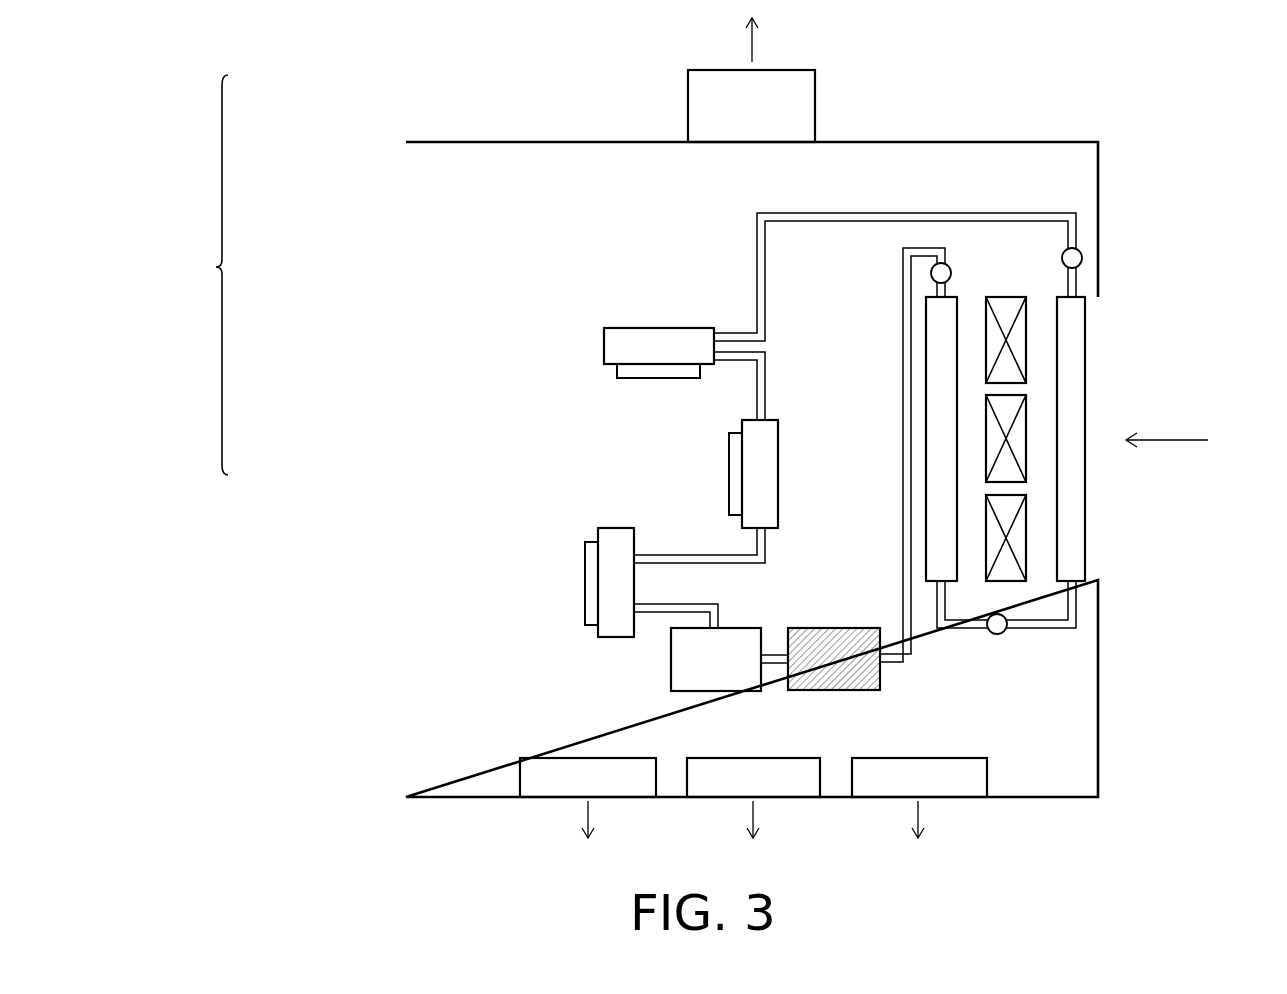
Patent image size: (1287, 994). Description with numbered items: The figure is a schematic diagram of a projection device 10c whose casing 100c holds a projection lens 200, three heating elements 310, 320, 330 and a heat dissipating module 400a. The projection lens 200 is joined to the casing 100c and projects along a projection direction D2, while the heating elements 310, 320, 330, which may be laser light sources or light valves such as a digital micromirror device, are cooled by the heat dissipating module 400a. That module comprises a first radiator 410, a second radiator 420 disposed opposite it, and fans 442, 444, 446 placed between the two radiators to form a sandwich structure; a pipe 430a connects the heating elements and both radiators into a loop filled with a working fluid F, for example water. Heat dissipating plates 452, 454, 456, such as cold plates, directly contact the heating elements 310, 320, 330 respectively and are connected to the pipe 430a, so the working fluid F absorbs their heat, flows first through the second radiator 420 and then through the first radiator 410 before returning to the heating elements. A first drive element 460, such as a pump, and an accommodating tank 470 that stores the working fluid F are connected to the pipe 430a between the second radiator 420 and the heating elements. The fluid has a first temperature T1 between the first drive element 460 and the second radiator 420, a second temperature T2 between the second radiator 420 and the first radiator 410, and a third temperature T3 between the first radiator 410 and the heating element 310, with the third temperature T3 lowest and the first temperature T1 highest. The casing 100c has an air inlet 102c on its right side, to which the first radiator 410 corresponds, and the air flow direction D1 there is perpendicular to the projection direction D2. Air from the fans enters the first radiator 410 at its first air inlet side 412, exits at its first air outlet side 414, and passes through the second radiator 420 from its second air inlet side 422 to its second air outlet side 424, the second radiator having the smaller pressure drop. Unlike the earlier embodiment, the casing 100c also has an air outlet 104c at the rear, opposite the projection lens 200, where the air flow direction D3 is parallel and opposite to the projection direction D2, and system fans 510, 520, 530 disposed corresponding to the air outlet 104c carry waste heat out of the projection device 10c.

The projection device 10c is at (1248, 861).
The casing 100c is at (468, 140).
The air inlet 102c is at (1098, 404).
The air outlet 104c is at (965, 800).
The projection lens 200 is at (800, 107).
The heating element 310 is at (663, 373).
The heating element 320 is at (733, 470).
The heating element 330 is at (590, 580).
The heat dissipating module 400a is at (220, 275).
The first radiator 410 is at (1073, 325).
The first air inlet side 412 is at (1087, 561).
The first air outlet side 414 is at (1056, 561).
The second radiator 420 is at (942, 312).
The second air inlet side 422 is at (958, 561).
The second air outlet side 424 is at (926, 558).
The pipe 430a is at (1017, 212).
The fan 442 is at (1027, 360).
The fan 444 is at (1027, 465).
The fan 446 is at (1028, 533).
The heat dissipating plate 452 is at (663, 343).
The heat dissipating plate 454 is at (763, 471).
The heat dissipating plate 456 is at (625, 584).
The first drive element 460 is at (714, 693).
The accommodating tank 470 is at (833, 693).
The working fluid F is at (848, 638).
The first temperature T1 is at (948, 266).
The second temperature T2 is at (1000, 630).
The third temperature T3 is at (1083, 258).
The air flow direction D1 is at (1187, 437).
The projection direction D2 is at (769, 40).
The air flow direction D3 is at (756, 837).
The system fan 510 is at (543, 783).
The system fan 520 is at (708, 783).
The system fan 530 is at (874, 783).